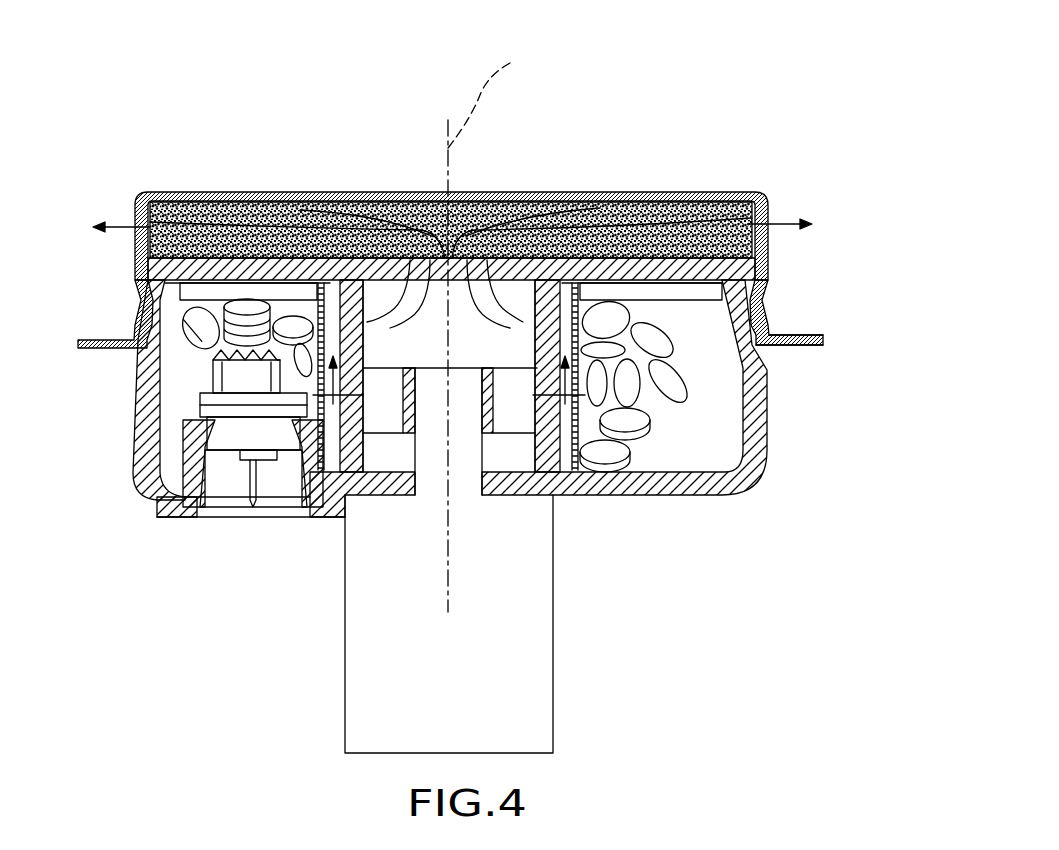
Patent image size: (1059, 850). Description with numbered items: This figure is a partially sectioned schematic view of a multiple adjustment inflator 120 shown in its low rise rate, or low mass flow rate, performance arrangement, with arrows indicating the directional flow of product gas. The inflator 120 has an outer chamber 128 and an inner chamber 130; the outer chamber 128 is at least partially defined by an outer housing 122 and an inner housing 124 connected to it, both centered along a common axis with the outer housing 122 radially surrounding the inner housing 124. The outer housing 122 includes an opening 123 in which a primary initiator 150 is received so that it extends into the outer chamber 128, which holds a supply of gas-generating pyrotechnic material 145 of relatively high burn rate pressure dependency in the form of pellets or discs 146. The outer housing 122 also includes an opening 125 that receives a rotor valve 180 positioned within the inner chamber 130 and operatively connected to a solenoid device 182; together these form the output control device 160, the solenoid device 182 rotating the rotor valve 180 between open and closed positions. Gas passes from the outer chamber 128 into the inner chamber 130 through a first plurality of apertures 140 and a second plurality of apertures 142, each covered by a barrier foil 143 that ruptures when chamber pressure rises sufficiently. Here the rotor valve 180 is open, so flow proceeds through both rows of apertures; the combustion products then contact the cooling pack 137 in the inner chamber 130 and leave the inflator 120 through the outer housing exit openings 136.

The multiple adjustment inflator 120 is at (580, 96).
The outer housing 122 is at (753, 457).
The opening 123 is at (165, 527).
The inner housing 124 is at (703, 268).
The opening 125 is at (410, 503).
The outer chamber 128 is at (717, 432).
The inner chamber 130 is at (482, 192).
The outer housing exit openings 136 is at (772, 213).
The cooling pack 137 is at (327, 192).
The first plurality of apertures 140 is at (355, 476).
The second plurality of apertures 142 is at (603, 192).
The barrier foil 143 is at (336, 334).
The gas-generating pyrotechnic material 145 is at (694, 376).
The pellets or discs 146 is at (763, 316).
The primary initiator 150 is at (262, 413).
The output control device 160 is at (318, 632).
The rotor valve 180 is at (503, 413).
The solenoid device 182 is at (527, 687).